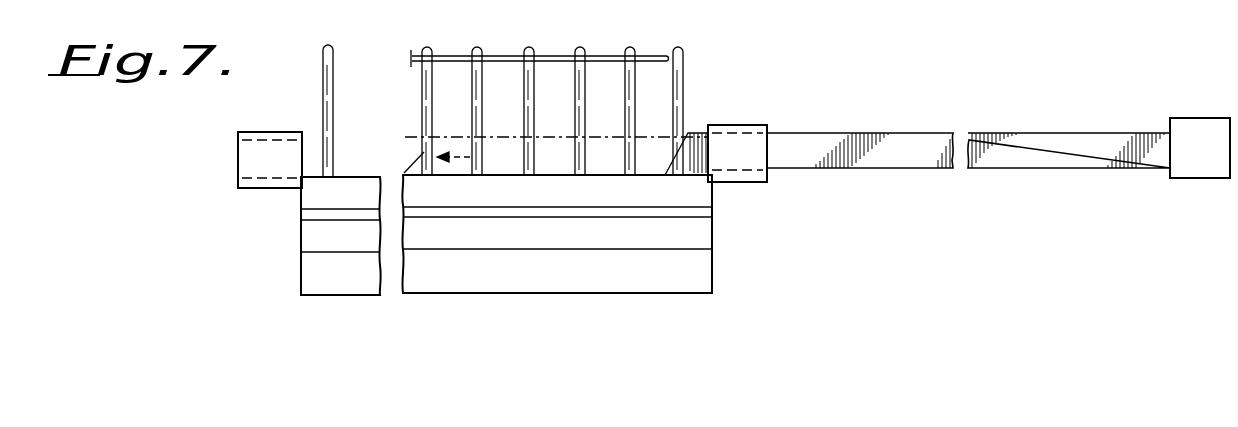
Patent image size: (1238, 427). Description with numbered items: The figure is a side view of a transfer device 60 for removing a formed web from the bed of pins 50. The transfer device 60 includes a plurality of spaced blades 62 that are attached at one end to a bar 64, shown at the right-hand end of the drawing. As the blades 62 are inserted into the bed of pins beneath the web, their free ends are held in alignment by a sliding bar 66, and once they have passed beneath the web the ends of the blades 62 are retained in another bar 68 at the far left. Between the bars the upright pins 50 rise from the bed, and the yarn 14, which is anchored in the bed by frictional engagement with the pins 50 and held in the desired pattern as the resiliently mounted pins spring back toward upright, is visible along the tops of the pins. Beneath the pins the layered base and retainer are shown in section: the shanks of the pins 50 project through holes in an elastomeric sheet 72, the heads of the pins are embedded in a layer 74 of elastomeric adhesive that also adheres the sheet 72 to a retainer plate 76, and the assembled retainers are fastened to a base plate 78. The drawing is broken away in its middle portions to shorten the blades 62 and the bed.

The yarn 14 is at (555, 54).
The pins 50 is at (428, 112).
The transfer device 60 is at (917, 126).
The blades 62 is at (1100, 113).
The bar 64 is at (1203, 140).
The sliding bar 66 is at (735, 150).
The bar 68 is at (270, 158).
The elastomeric sheet 72 is at (697, 192).
The layer of elastomeric adhesive 74 is at (697, 210).
The retainer plate 76 is at (690, 233).
The base plate 78 is at (690, 267).